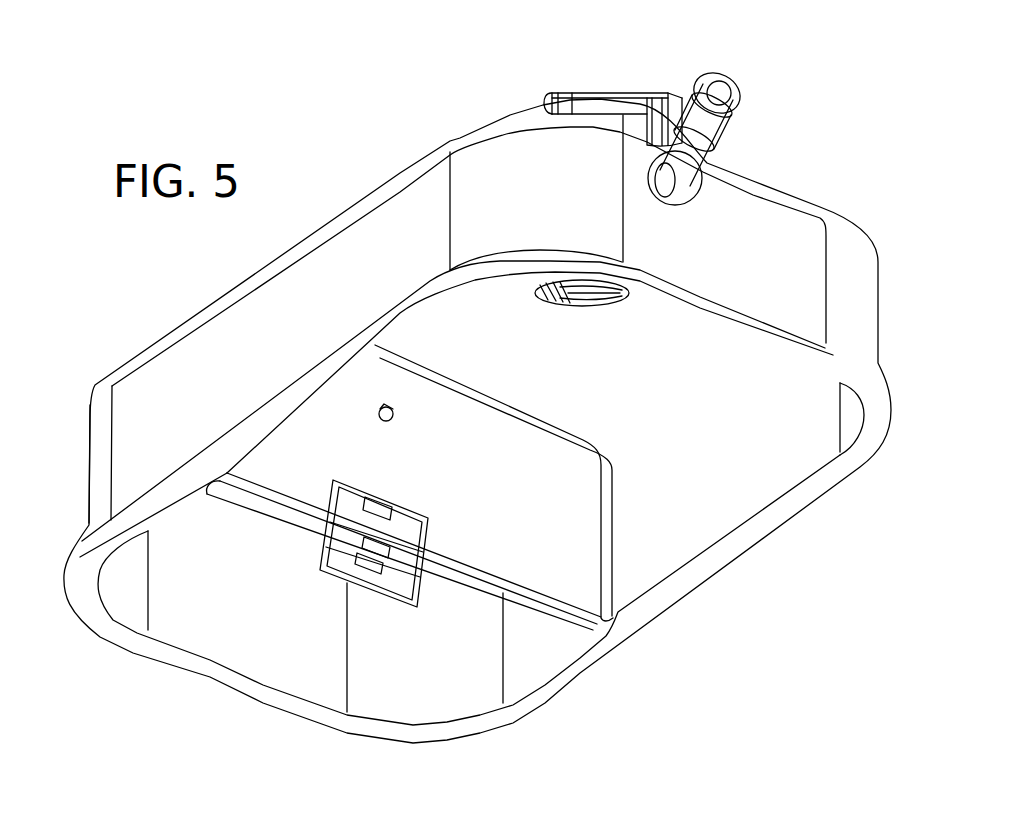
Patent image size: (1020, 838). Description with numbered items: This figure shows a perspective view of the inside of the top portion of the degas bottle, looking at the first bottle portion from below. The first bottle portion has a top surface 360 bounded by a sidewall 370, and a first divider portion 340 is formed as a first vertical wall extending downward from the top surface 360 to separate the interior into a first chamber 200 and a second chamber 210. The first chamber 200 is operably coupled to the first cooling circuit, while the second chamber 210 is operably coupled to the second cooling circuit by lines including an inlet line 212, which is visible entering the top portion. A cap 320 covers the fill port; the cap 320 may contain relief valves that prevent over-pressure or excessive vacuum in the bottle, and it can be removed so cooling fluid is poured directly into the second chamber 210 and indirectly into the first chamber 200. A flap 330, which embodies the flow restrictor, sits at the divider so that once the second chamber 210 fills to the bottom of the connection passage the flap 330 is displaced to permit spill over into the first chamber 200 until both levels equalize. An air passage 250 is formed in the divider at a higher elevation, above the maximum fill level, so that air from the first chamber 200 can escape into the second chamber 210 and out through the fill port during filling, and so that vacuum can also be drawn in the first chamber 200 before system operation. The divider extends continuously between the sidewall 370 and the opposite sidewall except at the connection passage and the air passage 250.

The first chamber 200 is at (397, 673).
The second chamber 210 is at (697, 510).
The inlet line 212 is at (683, 176).
The air passage 250 is at (390, 413).
The cap 320 is at (623, 110).
The flap 330 is at (340, 530).
The first divider portion 340 is at (469, 540).
The top surface 360 is at (596, 396).
The sidewall 370 is at (633, 570).